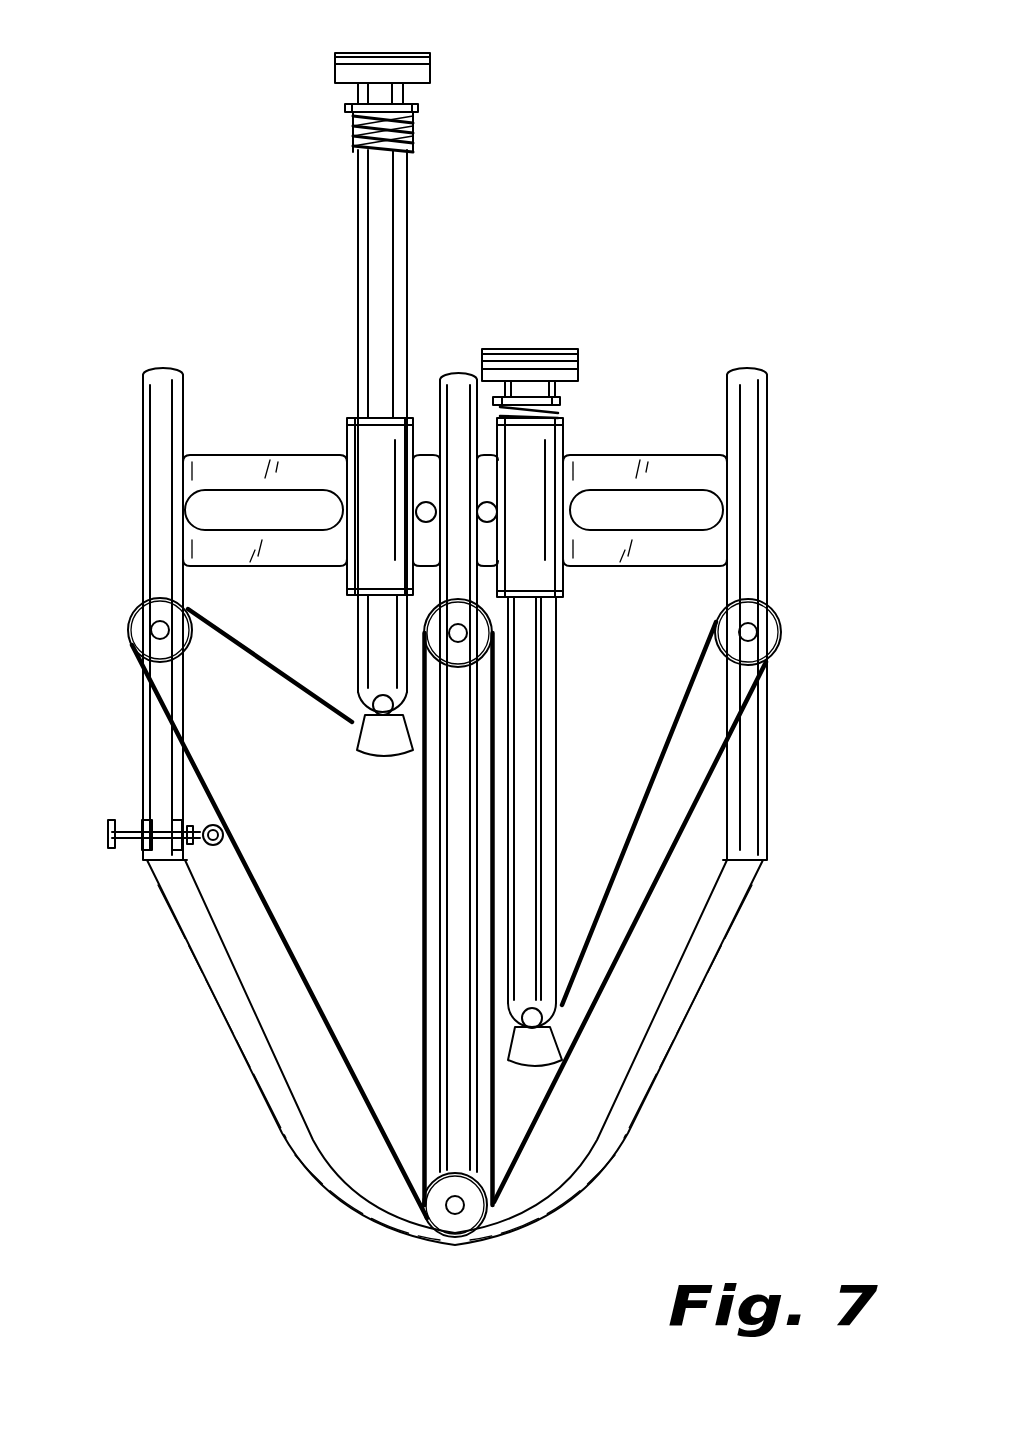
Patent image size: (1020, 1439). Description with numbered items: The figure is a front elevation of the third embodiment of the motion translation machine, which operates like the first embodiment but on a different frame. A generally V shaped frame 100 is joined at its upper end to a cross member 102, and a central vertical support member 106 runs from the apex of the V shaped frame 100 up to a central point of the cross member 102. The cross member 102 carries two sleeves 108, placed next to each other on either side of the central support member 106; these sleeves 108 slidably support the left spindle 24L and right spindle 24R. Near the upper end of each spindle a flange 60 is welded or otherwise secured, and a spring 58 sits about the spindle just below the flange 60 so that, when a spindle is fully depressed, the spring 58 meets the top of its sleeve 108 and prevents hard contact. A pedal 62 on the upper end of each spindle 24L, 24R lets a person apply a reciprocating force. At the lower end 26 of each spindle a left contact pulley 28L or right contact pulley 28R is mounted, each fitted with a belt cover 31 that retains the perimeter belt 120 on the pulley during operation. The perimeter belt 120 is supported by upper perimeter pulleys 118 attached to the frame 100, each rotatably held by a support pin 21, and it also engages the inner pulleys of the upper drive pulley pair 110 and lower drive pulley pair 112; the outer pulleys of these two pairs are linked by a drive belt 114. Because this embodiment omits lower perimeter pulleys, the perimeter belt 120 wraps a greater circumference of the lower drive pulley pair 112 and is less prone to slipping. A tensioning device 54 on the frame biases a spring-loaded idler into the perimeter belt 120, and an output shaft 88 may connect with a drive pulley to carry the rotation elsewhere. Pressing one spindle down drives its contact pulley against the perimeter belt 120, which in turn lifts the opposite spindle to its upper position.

The support pin 21 is at (458, 1208).
The left spindle 24L is at (400, 202).
The right spindle 24R is at (535, 718).
The lower end 26 is at (385, 665).
The left contact pulley 28L is at (365, 705).
The right contact pulley 28R is at (565, 985).
The belt cover 31 is at (378, 752).
The tensioning device 54 is at (120, 805).
The spring 58 is at (345, 130).
The flange 60 is at (346, 108).
The pedal 62 is at (336, 65).
The output shaft 88 is at (480, 645).
The V shaped frame 100 is at (152, 398).
The cross member 102 is at (688, 470).
The central vertical support member 106 is at (460, 385).
The sleeves 108 is at (350, 432).
The upper drive pulley pair 110 is at (478, 626).
The lower drive pulley pair 112 is at (455, 1210).
The drive belt 114 is at (490, 1080).
The upper perimeter pulleys 118 is at (152, 612).
The perimeter belt 120 is at (648, 797).